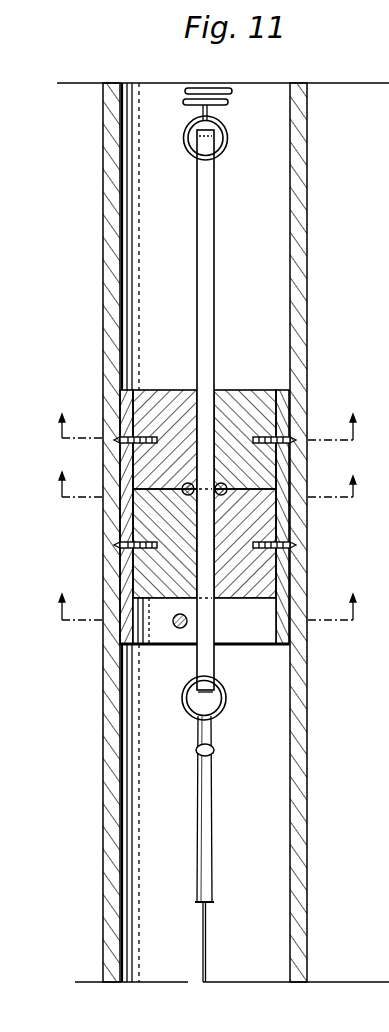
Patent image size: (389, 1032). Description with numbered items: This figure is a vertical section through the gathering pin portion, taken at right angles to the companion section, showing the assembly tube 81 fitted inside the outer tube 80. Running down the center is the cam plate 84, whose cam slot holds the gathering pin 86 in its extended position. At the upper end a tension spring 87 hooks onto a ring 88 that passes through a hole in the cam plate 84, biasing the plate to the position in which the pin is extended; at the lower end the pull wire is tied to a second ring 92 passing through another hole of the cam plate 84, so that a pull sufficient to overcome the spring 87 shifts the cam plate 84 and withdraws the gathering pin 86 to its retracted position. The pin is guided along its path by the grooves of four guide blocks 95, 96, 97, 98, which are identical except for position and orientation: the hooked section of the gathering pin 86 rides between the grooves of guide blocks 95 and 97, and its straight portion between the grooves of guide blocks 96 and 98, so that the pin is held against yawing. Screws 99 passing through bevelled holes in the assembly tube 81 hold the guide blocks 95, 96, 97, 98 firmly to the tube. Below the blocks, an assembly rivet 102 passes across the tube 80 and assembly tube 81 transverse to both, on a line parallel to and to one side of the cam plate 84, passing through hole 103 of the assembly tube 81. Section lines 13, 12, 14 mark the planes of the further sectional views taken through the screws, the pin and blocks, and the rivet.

The tube 80 is at (112, 187).
The assembly tube 81 is at (120, 392).
The cam plate 84 is at (205, 222).
The gathering pin 86 is at (220, 484).
The tension spring 87 is at (183, 93).
The ring 88 is at (190, 134).
The ring 92 is at (185, 708).
The guide block 95 is at (142, 390).
The guide block 96 is at (250, 395).
The guide block 97 is at (135, 570).
The guide block 98 is at (275, 570).
The screws 99 is at (122, 440).
The assembly rivet 102 is at (121, 648).
The hole 103 is at (175, 624).
The section line 12 is at (205, 497).
The section line 13 is at (206, 438).
The section line 14 is at (207, 618).